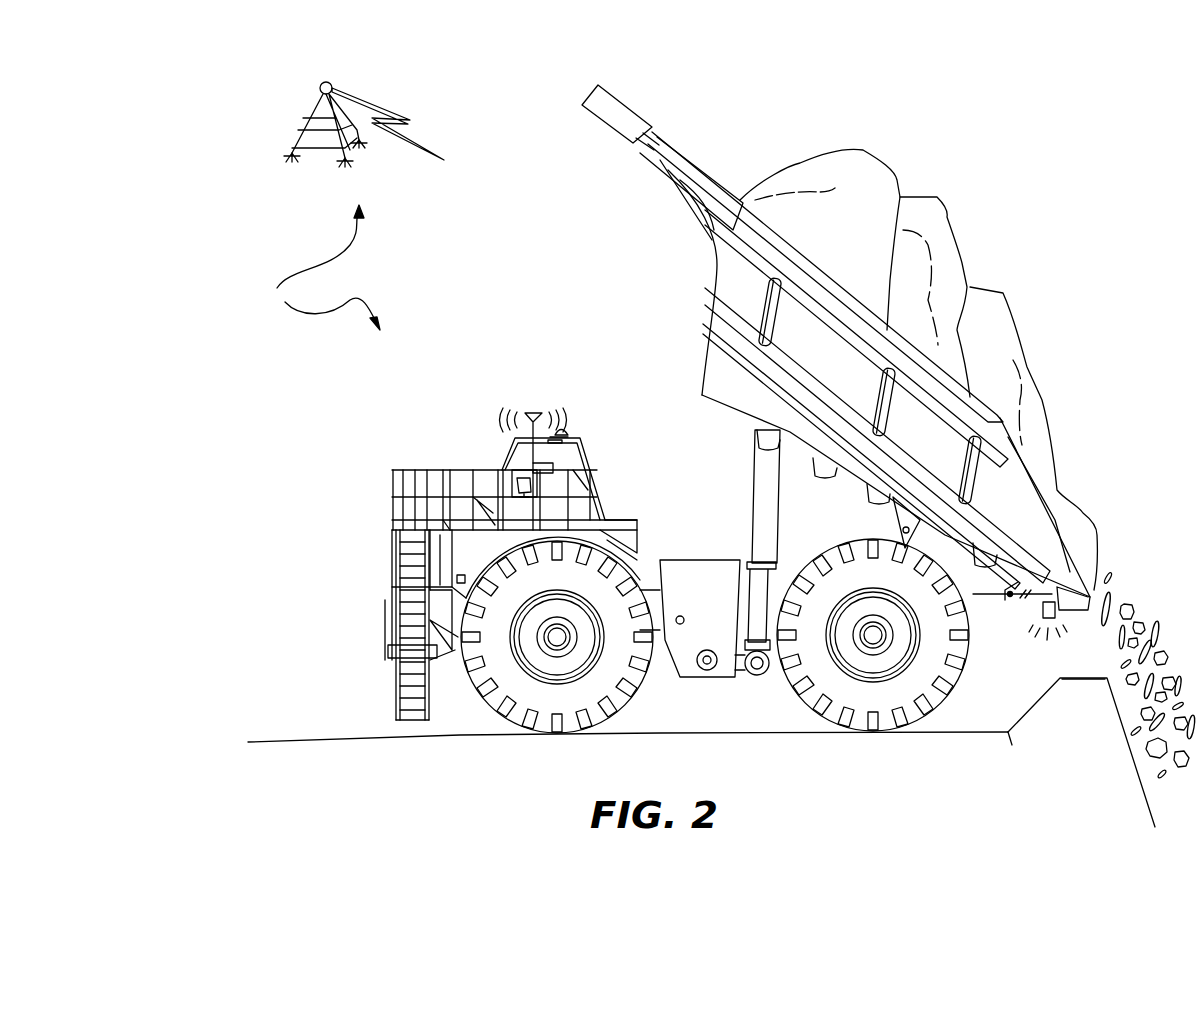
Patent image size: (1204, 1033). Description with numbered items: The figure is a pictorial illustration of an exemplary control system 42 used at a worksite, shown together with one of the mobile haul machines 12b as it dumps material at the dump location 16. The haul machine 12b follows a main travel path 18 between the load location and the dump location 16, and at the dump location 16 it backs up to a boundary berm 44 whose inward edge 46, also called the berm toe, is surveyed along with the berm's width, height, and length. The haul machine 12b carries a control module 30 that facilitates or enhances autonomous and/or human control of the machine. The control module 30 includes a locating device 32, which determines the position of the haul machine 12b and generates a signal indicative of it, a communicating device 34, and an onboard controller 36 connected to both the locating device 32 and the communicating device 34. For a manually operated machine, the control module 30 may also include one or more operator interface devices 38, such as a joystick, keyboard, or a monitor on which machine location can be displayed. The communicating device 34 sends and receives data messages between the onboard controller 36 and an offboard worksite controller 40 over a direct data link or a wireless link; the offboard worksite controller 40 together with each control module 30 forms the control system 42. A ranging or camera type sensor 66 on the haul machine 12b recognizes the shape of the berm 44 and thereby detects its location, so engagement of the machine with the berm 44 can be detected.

The haul machine 12b is at (356, 607).
The dump location 16 is at (983, 783).
The main travel path 18 is at (331, 738).
The control module 30 is at (633, 348).
The locating device 32 is at (567, 430).
The communicating device 34 is at (533, 411).
The onboard controller 36 is at (563, 445).
The operator interface device 38 is at (520, 483).
The offboard worksite controller 40 is at (262, 132).
The control system 42 is at (317, 267).
The boundary berm 44 is at (1092, 719).
The inward edge 46 is at (1010, 740).
The sensor 66 is at (1058, 614).